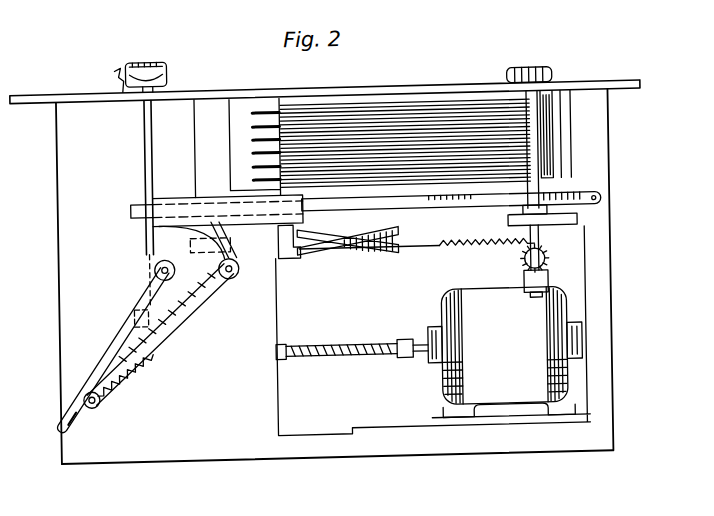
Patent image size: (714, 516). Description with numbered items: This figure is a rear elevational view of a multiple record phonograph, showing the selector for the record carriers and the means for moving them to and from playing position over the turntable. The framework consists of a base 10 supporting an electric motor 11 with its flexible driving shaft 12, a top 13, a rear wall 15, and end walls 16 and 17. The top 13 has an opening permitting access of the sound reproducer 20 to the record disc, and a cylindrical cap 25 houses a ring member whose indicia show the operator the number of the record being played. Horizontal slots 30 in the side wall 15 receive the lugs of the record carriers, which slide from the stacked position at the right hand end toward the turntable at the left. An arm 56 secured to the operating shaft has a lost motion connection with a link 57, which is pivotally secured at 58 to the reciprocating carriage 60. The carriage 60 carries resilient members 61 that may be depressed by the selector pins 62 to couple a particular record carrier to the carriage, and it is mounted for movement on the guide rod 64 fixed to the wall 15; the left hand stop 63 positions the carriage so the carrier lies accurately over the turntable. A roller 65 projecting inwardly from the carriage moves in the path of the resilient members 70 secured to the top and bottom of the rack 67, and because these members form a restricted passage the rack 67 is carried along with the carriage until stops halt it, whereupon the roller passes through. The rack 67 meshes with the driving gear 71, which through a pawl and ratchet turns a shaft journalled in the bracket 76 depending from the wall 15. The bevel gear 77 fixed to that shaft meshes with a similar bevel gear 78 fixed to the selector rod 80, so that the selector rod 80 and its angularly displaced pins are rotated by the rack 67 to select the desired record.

The base 10 is at (249, 457).
The electric motor 11 is at (480, 371).
The flexible driving shaft 12 is at (341, 345).
The top 13 is at (77, 89).
The rear wall 15 is at (265, 387).
The end wall 16 is at (611, 317).
The end wall 17 is at (59, 337).
The sound reproducer 20 is at (148, 62).
The cylindrical cap 25 is at (539, 68).
The horizontal slot 30 is at (473, 143).
The arm 56 is at (119, 331).
The link 57 is at (193, 309).
The pivot 58 is at (231, 283).
The reciprocating carriage 60 is at (197, 134).
The resilient members 61 is at (267, 113).
The selector pins 62 is at (525, 137).
The left hand stop 63 is at (132, 201).
The guide rod 64 is at (580, 197).
The roller 65 is at (270, 260).
The rack 67 is at (468, 251).
The resilient members 70 is at (382, 256).
The driving gear 71 is at (551, 257).
The bracket 76 is at (551, 280).
The bevel gear 77 is at (524, 270).
The bevel gear 78 is at (566, 227).
The selector rod 80 is at (566, 94).